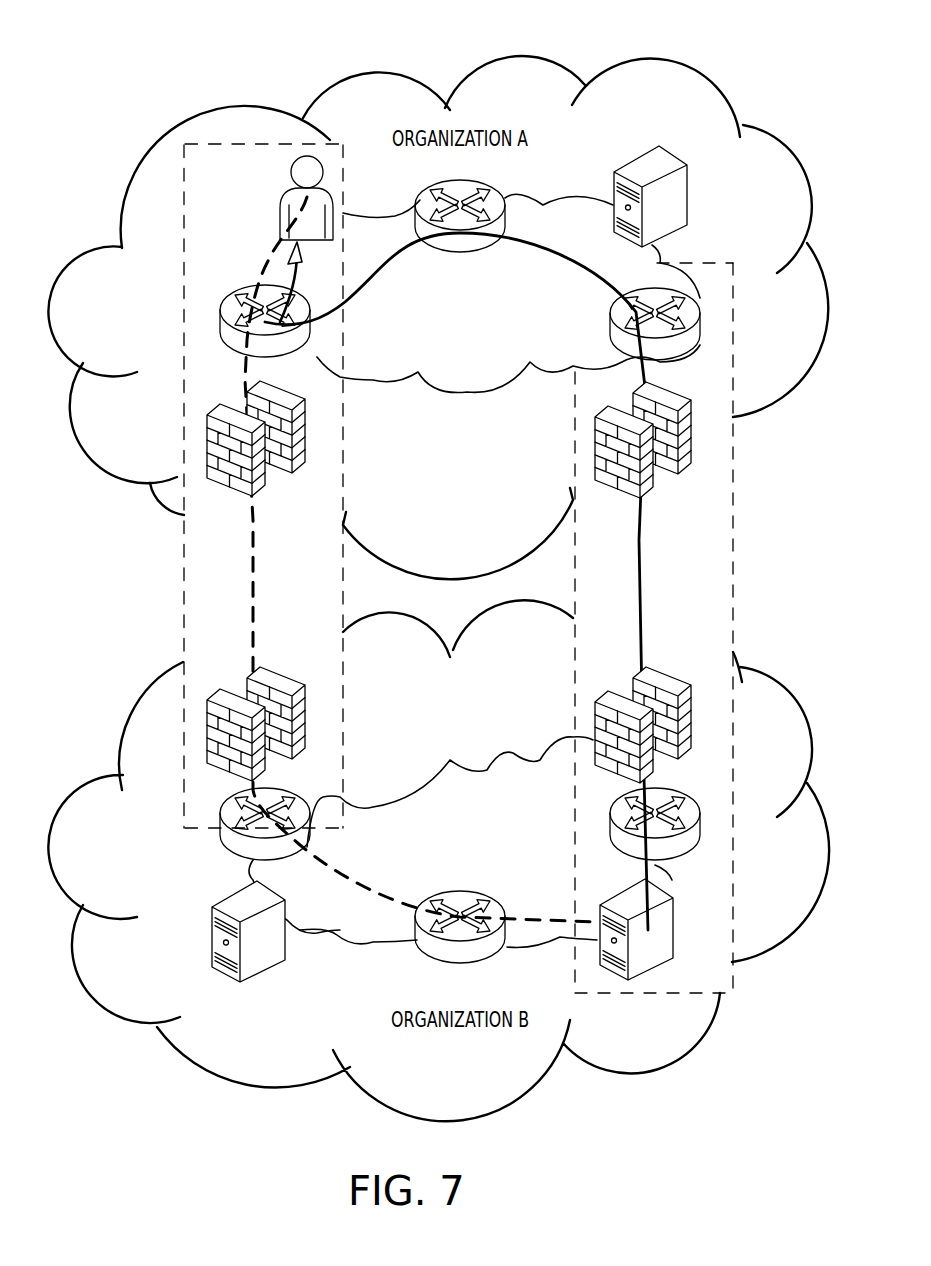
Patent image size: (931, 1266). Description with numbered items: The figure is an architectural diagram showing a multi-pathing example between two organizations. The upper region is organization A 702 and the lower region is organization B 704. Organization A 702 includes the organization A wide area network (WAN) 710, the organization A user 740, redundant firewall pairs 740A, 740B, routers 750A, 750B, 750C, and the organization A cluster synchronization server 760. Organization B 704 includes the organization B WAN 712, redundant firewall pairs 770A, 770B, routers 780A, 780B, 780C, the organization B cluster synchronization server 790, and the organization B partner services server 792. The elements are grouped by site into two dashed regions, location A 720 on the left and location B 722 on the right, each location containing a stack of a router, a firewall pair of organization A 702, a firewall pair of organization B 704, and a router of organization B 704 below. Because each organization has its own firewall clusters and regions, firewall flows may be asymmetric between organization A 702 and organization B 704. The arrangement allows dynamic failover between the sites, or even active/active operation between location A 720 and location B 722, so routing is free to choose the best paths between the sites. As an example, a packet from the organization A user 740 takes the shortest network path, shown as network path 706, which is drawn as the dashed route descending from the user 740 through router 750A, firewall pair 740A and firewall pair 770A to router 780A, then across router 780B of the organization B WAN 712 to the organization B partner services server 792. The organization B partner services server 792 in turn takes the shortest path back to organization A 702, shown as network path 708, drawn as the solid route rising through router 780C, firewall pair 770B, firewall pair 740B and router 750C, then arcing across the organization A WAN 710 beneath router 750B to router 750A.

The organization A 702 is at (523, 70).
The organization B 704 is at (513, 1078).
The network path 706 is at (253, 658).
The network path 708 is at (645, 640).
The organization A wide area network (WAN) 710 is at (440, 355).
The organization B WAN 712 is at (497, 877).
The location A 720 is at (316, 622).
The location B 722 is at (658, 622).
The organization A user 740 is at (282, 210).
The redundant firewall pair 740A is at (207, 452).
The redundant firewall pair 740B is at (595, 452).
The router 750A is at (222, 327).
The router 750B is at (490, 197).
The router 750C is at (697, 327).
The organization A cluster synchronization server 760 is at (686, 193).
The redundant firewall pair 770A is at (207, 730).
The redundant firewall pair 770B is at (595, 737).
The router 780A is at (222, 845).
The router 780B is at (417, 940).
The router 780C is at (697, 835).
The organization B cluster synchronization server 790 is at (212, 947).
The organization B partner services server 792 is at (672, 950).